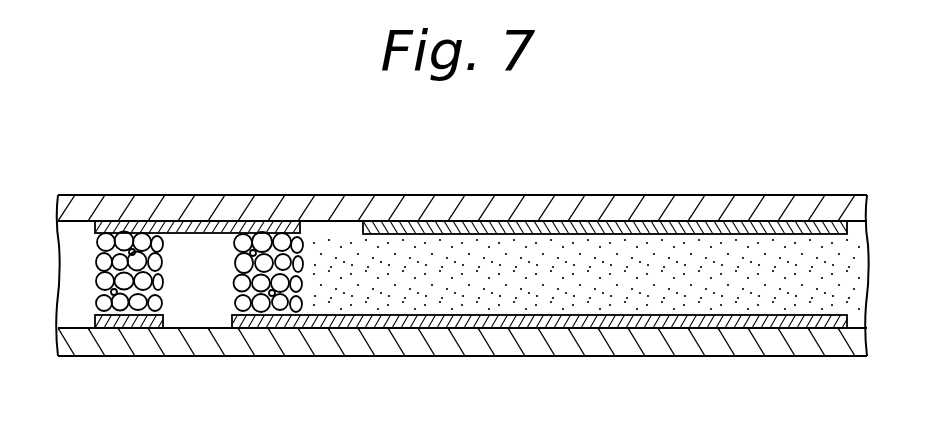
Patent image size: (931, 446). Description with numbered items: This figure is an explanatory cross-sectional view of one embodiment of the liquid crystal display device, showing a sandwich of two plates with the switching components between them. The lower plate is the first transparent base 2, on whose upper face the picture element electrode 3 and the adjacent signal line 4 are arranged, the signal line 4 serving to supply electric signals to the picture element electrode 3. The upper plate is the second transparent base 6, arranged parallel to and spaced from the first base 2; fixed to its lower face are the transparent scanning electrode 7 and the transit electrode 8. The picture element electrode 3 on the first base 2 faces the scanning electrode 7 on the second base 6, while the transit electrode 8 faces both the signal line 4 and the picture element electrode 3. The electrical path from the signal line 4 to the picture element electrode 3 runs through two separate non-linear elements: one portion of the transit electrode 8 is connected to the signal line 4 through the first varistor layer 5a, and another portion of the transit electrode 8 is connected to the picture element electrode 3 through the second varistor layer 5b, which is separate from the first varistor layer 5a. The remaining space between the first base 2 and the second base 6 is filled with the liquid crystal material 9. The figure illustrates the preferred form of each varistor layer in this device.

The first transparent base 2 is at (537, 345).
The picture element electrode 3 is at (380, 320).
The signal line 4 is at (127, 320).
The first varistor layer 5a is at (140, 240).
The second varistor layer 5b is at (308, 242).
The second transparent base 6 is at (542, 206).
The scanning electrode 7 is at (446, 228).
The transit electrode 8 is at (200, 228).
The liquid crystal material 9 is at (676, 270).